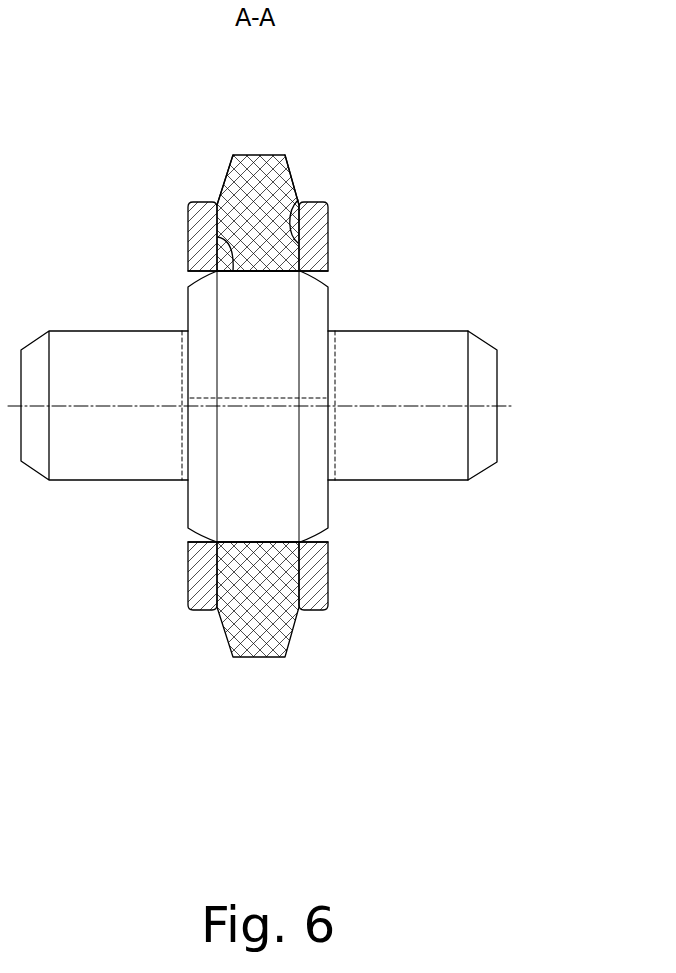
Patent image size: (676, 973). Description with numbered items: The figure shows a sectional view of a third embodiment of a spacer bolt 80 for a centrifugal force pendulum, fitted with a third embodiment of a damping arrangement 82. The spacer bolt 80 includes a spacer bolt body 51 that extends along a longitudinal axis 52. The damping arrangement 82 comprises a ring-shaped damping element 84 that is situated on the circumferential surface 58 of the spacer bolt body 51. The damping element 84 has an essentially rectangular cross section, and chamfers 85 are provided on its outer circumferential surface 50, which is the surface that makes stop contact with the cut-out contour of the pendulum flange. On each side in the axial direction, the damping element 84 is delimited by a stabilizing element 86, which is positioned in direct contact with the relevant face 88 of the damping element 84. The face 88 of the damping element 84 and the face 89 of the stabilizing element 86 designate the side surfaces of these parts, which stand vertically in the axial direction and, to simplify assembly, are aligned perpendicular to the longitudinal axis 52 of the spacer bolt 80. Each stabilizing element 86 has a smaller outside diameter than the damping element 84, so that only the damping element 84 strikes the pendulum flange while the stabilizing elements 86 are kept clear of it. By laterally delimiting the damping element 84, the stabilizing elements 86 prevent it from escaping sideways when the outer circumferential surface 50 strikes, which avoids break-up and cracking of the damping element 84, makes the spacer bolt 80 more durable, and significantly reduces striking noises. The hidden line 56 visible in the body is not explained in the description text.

The outer circumferential surface 50 is at (249, 156).
The spacer bolt body 51 is at (445, 468).
The longitudinal axis 52 is at (497, 388).
The bore 56 is at (272, 398).
The circumferential surface 58 is at (256, 272).
The spacer bolt 80 is at (420, 557).
The damping arrangement 82 is at (312, 645).
The damping element 84 is at (290, 158).
The chamfers 85 is at (227, 169).
The stabilizing element 86 is at (202, 208).
The face 88 is at (296, 200).
The face 89 is at (208, 574).